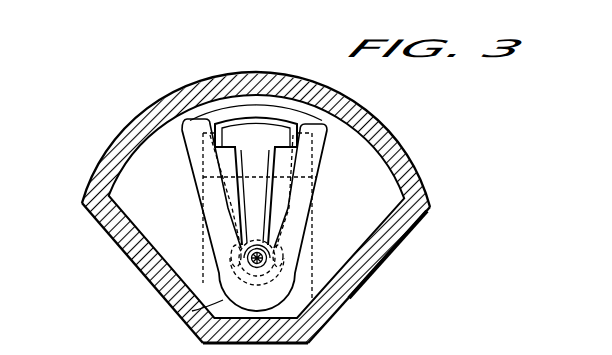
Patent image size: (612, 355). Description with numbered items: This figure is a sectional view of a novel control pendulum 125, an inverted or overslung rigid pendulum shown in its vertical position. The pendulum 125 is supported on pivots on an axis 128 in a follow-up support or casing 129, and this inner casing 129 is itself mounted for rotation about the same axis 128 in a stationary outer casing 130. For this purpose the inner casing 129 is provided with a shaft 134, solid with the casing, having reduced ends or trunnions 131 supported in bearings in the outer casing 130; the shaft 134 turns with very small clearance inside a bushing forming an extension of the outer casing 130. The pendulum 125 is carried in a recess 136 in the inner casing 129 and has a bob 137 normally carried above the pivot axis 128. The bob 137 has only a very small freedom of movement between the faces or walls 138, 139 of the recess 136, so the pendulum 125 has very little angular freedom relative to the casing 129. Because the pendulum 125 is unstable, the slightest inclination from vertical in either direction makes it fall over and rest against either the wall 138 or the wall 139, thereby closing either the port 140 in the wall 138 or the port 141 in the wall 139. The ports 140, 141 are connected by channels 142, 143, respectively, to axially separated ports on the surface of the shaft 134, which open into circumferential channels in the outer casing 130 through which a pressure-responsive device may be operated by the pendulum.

The control pendulum 125 is at (240, 163).
The axis 128 is at (170, 300).
The follow-up support or casing 129 is at (188, 327).
The stationary outer casing 130 is at (322, 322).
The trunnion 131 is at (272, 266).
The shaft 134 is at (374, 270).
The recess 136 is at (288, 128).
The bob 137 is at (222, 123).
The wall of the recess 138 is at (195, 123).
The wall of the recess 139 is at (326, 105).
The port 140 is at (190, 138).
The port 141 is at (370, 120).
The channel 142 is at (232, 208).
The channel 143 is at (300, 176).